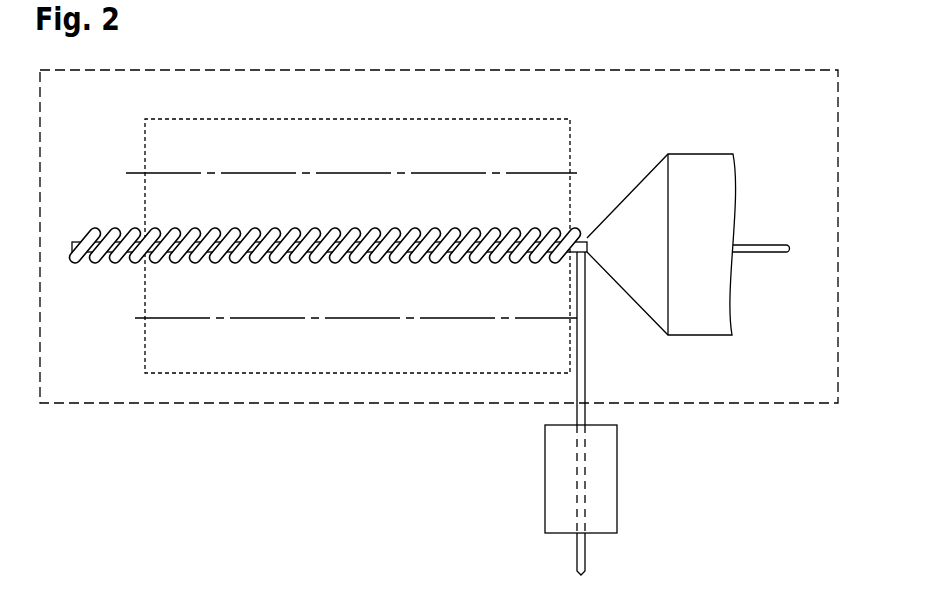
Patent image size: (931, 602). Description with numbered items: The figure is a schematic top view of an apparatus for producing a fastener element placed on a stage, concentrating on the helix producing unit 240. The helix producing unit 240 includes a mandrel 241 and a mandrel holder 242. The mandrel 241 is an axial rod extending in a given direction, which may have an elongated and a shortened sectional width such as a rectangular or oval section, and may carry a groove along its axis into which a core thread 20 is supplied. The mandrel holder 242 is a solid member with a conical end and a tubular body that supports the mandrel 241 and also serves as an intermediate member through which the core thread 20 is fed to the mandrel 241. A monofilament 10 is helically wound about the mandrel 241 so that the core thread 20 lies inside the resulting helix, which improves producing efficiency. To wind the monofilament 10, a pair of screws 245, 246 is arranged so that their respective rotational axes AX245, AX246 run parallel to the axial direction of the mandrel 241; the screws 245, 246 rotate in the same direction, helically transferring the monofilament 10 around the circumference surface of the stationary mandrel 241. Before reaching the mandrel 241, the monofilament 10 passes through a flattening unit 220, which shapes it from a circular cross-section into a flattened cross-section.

The monofilament 10 is at (83, 264).
The core thread 20 is at (83, 240).
The flattening unit 220 is at (618, 488).
The helix producing unit 240 is at (121, 405).
The mandrel 241 is at (308, 262).
The mandrel holder 242 is at (720, 204).
The screw 245 is at (165, 118).
The screw 246 is at (140, 360).
The rotational axis of screw AX245 is at (381, 175).
The rotational axis of screw AX246 is at (330, 318).